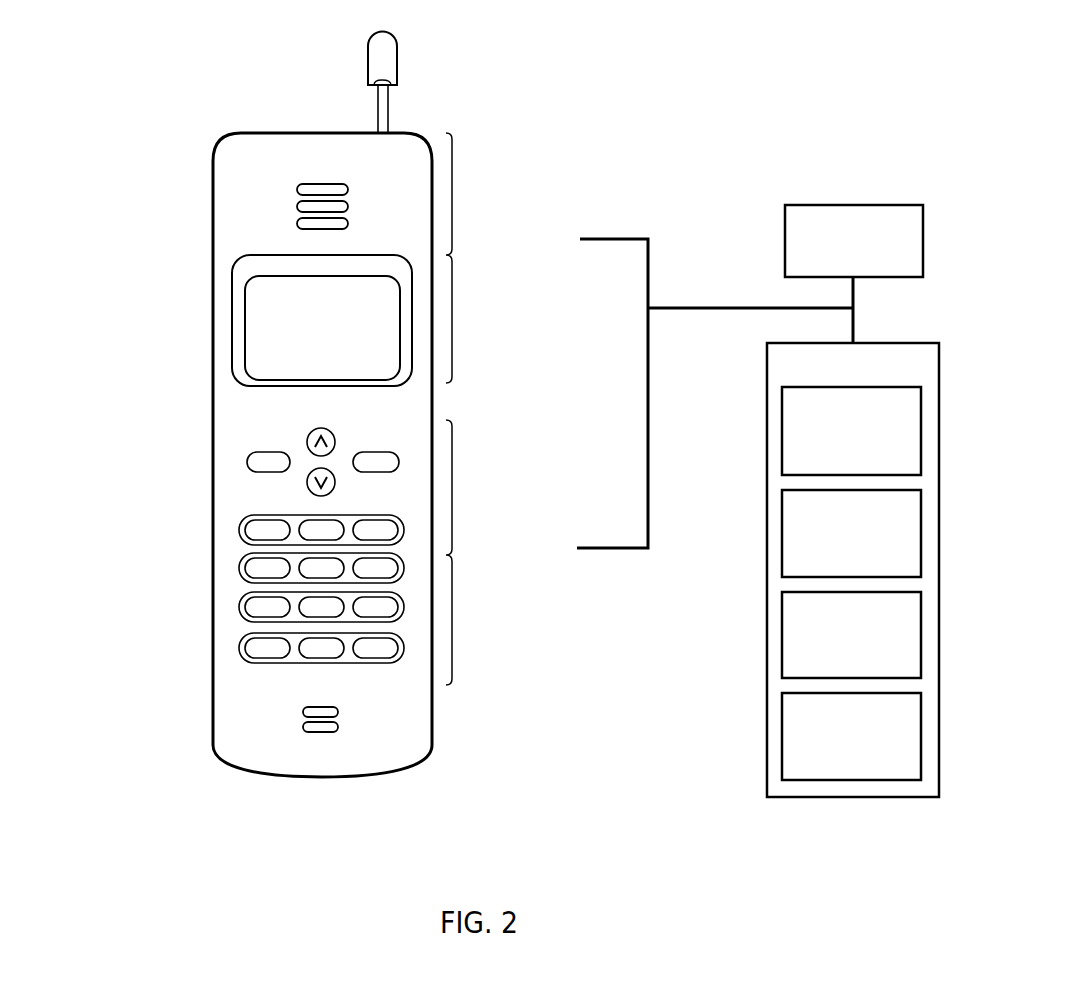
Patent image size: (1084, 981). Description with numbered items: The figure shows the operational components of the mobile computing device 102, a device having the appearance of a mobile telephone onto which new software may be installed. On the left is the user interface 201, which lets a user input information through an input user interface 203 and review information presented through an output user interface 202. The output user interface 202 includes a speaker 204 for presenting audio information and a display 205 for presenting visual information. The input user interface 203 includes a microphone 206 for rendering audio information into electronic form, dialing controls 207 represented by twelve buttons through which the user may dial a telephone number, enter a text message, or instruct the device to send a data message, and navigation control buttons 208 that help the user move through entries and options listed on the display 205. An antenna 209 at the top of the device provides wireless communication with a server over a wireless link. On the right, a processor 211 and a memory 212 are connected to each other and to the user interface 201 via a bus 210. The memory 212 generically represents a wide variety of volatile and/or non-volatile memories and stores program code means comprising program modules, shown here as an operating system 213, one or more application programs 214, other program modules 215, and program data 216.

The mobile computing device 102 is at (690, 113).
The user interface 201 is at (210, 784).
The output user interface 202 is at (501, 258).
The input user interface 203 is at (500, 552).
The speaker 204 is at (204, 200).
The display 205 is at (204, 330).
The microphone 206 is at (204, 718).
The dialing controls 207 is at (201, 663).
The navigation control buttons 208 is at (204, 452).
The antenna 209 is at (418, 95).
The bus 210 is at (682, 307).
The processor 211 is at (854, 241).
The memory 212 is at (853, 570).
The operating system 213 is at (851, 431).
The application programs 214 is at (851, 533).
The other program modules 215 is at (851, 635).
The program data 216 is at (851, 736).